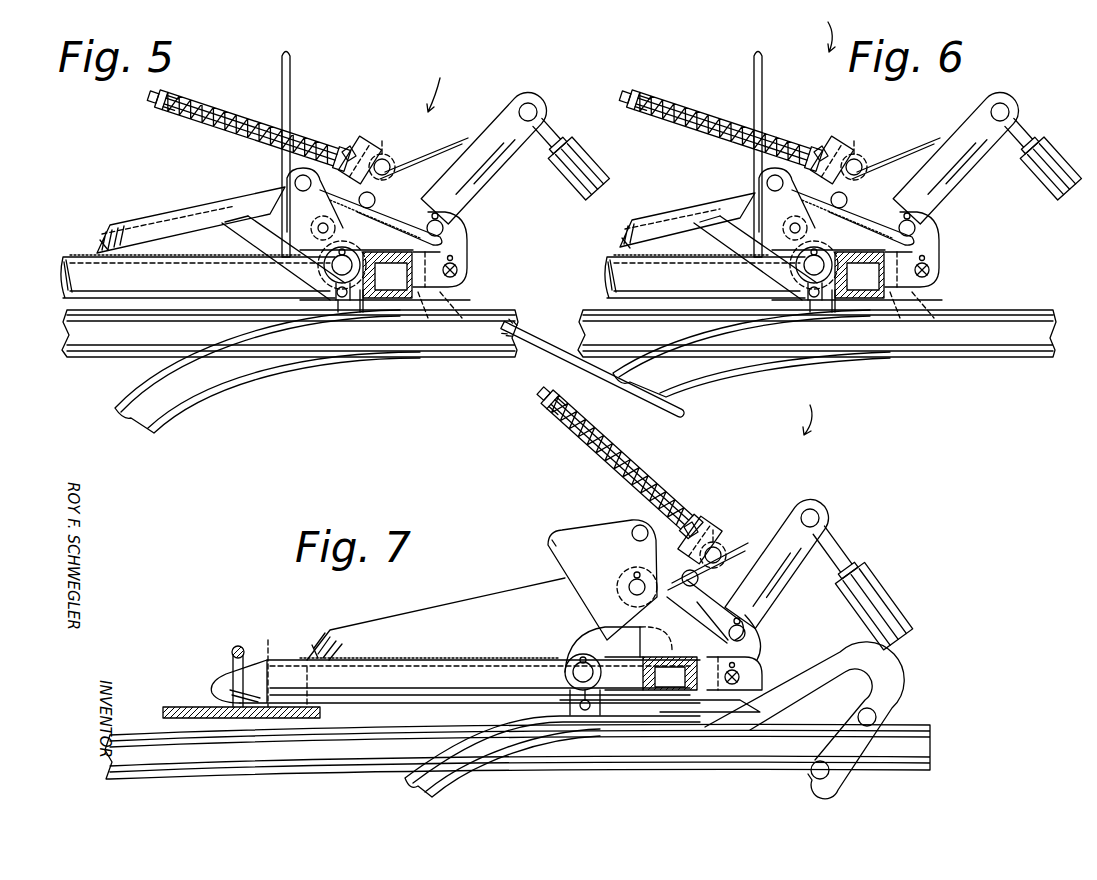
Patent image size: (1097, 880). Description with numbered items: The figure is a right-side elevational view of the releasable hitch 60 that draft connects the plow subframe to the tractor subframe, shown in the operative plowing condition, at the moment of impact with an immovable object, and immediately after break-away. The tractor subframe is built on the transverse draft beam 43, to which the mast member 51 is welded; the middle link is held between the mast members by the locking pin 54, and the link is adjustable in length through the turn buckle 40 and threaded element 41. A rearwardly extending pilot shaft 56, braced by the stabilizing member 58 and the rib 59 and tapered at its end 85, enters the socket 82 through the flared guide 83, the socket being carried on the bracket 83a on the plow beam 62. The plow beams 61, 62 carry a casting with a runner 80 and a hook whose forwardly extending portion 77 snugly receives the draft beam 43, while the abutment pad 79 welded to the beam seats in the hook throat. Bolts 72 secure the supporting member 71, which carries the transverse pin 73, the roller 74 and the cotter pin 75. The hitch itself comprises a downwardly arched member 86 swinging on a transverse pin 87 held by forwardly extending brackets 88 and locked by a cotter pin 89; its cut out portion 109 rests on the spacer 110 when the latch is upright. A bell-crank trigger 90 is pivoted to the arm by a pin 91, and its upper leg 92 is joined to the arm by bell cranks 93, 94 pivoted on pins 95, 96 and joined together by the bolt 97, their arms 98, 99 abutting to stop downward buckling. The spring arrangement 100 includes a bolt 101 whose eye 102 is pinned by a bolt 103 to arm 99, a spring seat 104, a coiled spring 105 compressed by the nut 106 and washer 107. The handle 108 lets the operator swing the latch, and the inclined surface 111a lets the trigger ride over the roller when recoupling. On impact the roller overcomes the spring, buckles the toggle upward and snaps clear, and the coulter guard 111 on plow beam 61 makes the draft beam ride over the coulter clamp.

In FIG. 5, the turn buckle 40 is at (600, 172).
In FIG. 6, the turn buckle 40 is at (1053, 168).
In FIG. 7, the turn buckle 40 is at (880, 580).
In FIG. 5, the threaded element 41 is at (575, 148).
In FIG. 6, the threaded element 41 is at (1024, 134).
In FIG. 7, the threaded element 41 is at (850, 556).
In FIG. 5, the transverse draft beam 43 is at (398, 293).
In FIG. 6, the transverse draft beam 43 is at (859, 275).
In FIG. 7, the transverse draft beam 43 is at (670, 673).
In FIG. 5, the mast member 51 is at (527, 93).
In FIG. 6, the mast member 51 is at (959, 147).
In FIG. 7, the mast member 51 is at (810, 500).
In FIG. 5, the locking pin 54 is at (535, 108).
In FIG. 6, the locking pin 54 is at (1011, 102).
In FIG. 7, the locking pin 54 is at (818, 516).
In FIG. 5, the pilot shaft 56 is at (73, 275).
In FIG. 6, the pilot shaft 56 is at (614, 272).
In FIG. 7, the pilot shaft 56 is at (470, 680).
In FIG. 5, the stabilizing member 58 is at (102, 233).
In FIG. 6, the stabilizing member 58 is at (630, 223).
In FIG. 7, the stabilizing member 58 is at (430, 614).
In FIG. 5, the rib 59 is at (100, 240).
In FIG. 6, the rib 59 is at (622, 240).
In FIG. 7, the rib 59 is at (330, 635).
In FIG. 5, the releasable hitch 60 is at (446, 87).
In FIG. 6, the releasable hitch 60 is at (821, 33).
In FIG. 7, the releasable hitch 60 is at (800, 415).
In FIG. 5, the plow beam 61 is at (136, 428).
In FIG. 6, the plow beam 61 is at (751, 353).
In FIG. 7, the plow beam 61 is at (552, 756).
In FIG. 5, the plow beam 62 is at (70, 356).
In FIG. 6, the plow beam 62 is at (817, 333).
In FIG. 7, the plow beam 62 is at (517, 751).
In FIG. 5, the supporting member 71 is at (344, 297).
In FIG. 6, the supporting member 71 is at (828, 317).
In FIG. 7, the supporting member 71 is at (585, 710).
In FIG. 5, the bolts 72 is at (338, 300).
In FIG. 6, the bolts 72 is at (814, 323).
In FIG. 7, the bolts 72 is at (588, 708).
In FIG. 5, the transverse pin 73 is at (335, 272).
In FIG. 6, the transverse pin 73 is at (790, 297).
In FIG. 7, the transverse pin 73 is at (575, 676).
In FIG. 5, the roller 74 is at (340, 272).
In FIG. 6, the roller 74 is at (802, 315).
In FIG. 7, the roller 74 is at (580, 670).
In FIG. 5, the cotter pin 75 is at (346, 274).
In FIG. 6, the cotter pin 75 is at (818, 328).
In FIG. 7, the cotter pin 75 is at (575, 690).
In FIG. 7, the forwardly extending portion 77 is at (618, 649).
In FIG. 5, the abutment pad 79 is at (378, 292).
In FIG. 6, the abutment pad 79 is at (850, 318).
In FIG. 7, the abutment pad 79 is at (624, 673).
In FIG. 5, the runner 80 is at (473, 301).
In FIG. 6, the runner 80 is at (865, 283).
In FIG. 7, the runner 80 is at (660, 710).
In FIG. 7, the socket 82 is at (238, 647).
In FIG. 7, the flared funnel or guide 83 is at (268, 636).
In FIG. 7, the bracket 83a is at (185, 707).
In FIG. 7, the tapered end 85 is at (222, 683).
In FIG. 5, the downwardly arched member 86 is at (463, 240).
In FIG. 6, the downwardly arched member 86 is at (930, 249).
In FIG. 7, the downwardly arched member 86 is at (755, 655).
In FIG. 5, the transverse pin 87 is at (456, 268).
In FIG. 6, the transverse pin 87 is at (944, 262).
In FIG. 7, the transverse pin 87 is at (739, 676).
In FIG. 5, the forwardly extending brackets 88 is at (468, 272).
In FIG. 6, the forwardly extending brackets 88 is at (949, 272).
In FIG. 7, the forwardly extending brackets 88 is at (762, 672).
In FIG. 5, the cotter pin 89 is at (467, 284).
In FIG. 6, the cotter pin 89 is at (949, 282).
In FIG. 7, the cotter pin 89 is at (762, 682).
In FIG. 5, the trigger 90 is at (237, 217).
In FIG. 6, the trigger 90 is at (742, 200).
In FIG. 7, the trigger 90 is at (575, 590).
In FIG. 5, the pin 91 is at (317, 233).
In FIG. 6, the pin 91 is at (766, 258).
In FIG. 7, the pin 91 is at (628, 590).
In FIG. 5, the upper leg 92 is at (295, 183).
In FIG. 6, the upper leg 92 is at (751, 181).
In FIG. 7, the upper leg 92 is at (622, 545).
In FIG. 5, the bell crank 93 is at (362, 143).
In FIG. 6, the bell crank 93 is at (818, 133).
In FIG. 7, the bell crank 93 is at (712, 521).
In FIG. 5, the bell crank 94 is at (418, 207).
In FIG. 6, the bell crank 94 is at (853, 214).
In FIG. 7, the bell crank 94 is at (750, 613).
In FIG. 5, the pin 95 is at (285, 177).
In FIG. 6, the pin 95 is at (766, 195).
In FIG. 7, the pin 95 is at (630, 530).
In FIG. 5, the pin 96 is at (438, 226).
In FIG. 6, the pin 96 is at (940, 219).
In FIG. 7, the pin 96 is at (745, 630).
In FIG. 5, the bolt 97 is at (423, 173).
In FIG. 6, the bolt 97 is at (896, 160).
In FIG. 7, the bolt 97 is at (708, 566).
In FIG. 5, the upwardly extending arm 98 is at (390, 163).
In FIG. 6, the upwardly extending arm 98 is at (831, 153).
In FIG. 7, the upwardly extending arm 98 is at (730, 540).
In FIG. 5, the upwardly extending arm 99 is at (390, 183).
In FIG. 6, the upwardly extending arm 99 is at (866, 144).
In FIG. 7, the upwardly extending arm 99 is at (722, 555).
In FIG. 5, the spring arrangement 100 is at (263, 93).
In FIG. 6, the spring arrangement 100 is at (730, 105).
In FIG. 7, the spring arrangement 100 is at (645, 430).
In FIG. 5, the bolt 101 is at (217, 120).
In FIG. 6, the bolt 101 is at (664, 130).
In FIG. 7, the bolt 101 is at (583, 448).
In FIG. 5, the eye 102 is at (395, 133).
In FIG. 6, the eye 102 is at (875, 139).
In FIG. 7, the eye 102 is at (740, 525).
In FIG. 5, the bolt 103 is at (387, 163).
In FIG. 6, the bolt 103 is at (894, 136).
In FIG. 7, the bolt 103 is at (722, 545).
In FIG. 5, the spring seat 104 is at (343, 143).
In FIG. 6, the spring seat 104 is at (799, 134).
In FIG. 7, the spring seat 104 is at (692, 508).
In FIG. 5, the coiled spring 105 is at (297, 123).
In FIG. 6, the coiled spring 105 is at (729, 109).
In FIG. 7, the coiled spring 105 is at (608, 430).
In FIG. 5, the nut 106 is at (183, 97).
In FIG. 6, the nut 106 is at (651, 89).
In FIG. 7, the nut 106 is at (580, 400).
In FIG. 5, the washer 107 is at (183, 120).
In FIG. 6, the washer 107 is at (649, 119).
In FIG. 7, the washer 107 is at (562, 420).
In FIG. 5, the handle 108 is at (292, 72).
In FIG. 6, the handle 108 is at (743, 155).
In FIG. 7, the handle 108 is at (684, 418).
In FIG. 5, the cut out portion 109 is at (455, 300).
In FIG. 6, the cut out portion 109 is at (935, 319).
In FIG. 5, the spacer 110 is at (447, 302).
In FIG. 6, the spacer 110 is at (908, 320).
In FIG. 7, the coulter guard 111 is at (878, 673).
In FIG. 5, the inclined surface 111a is at (240, 242).
In FIG. 6, the inclined surface 111a is at (705, 245).
In FIG. 7, the inclined surface 111a is at (552, 540).